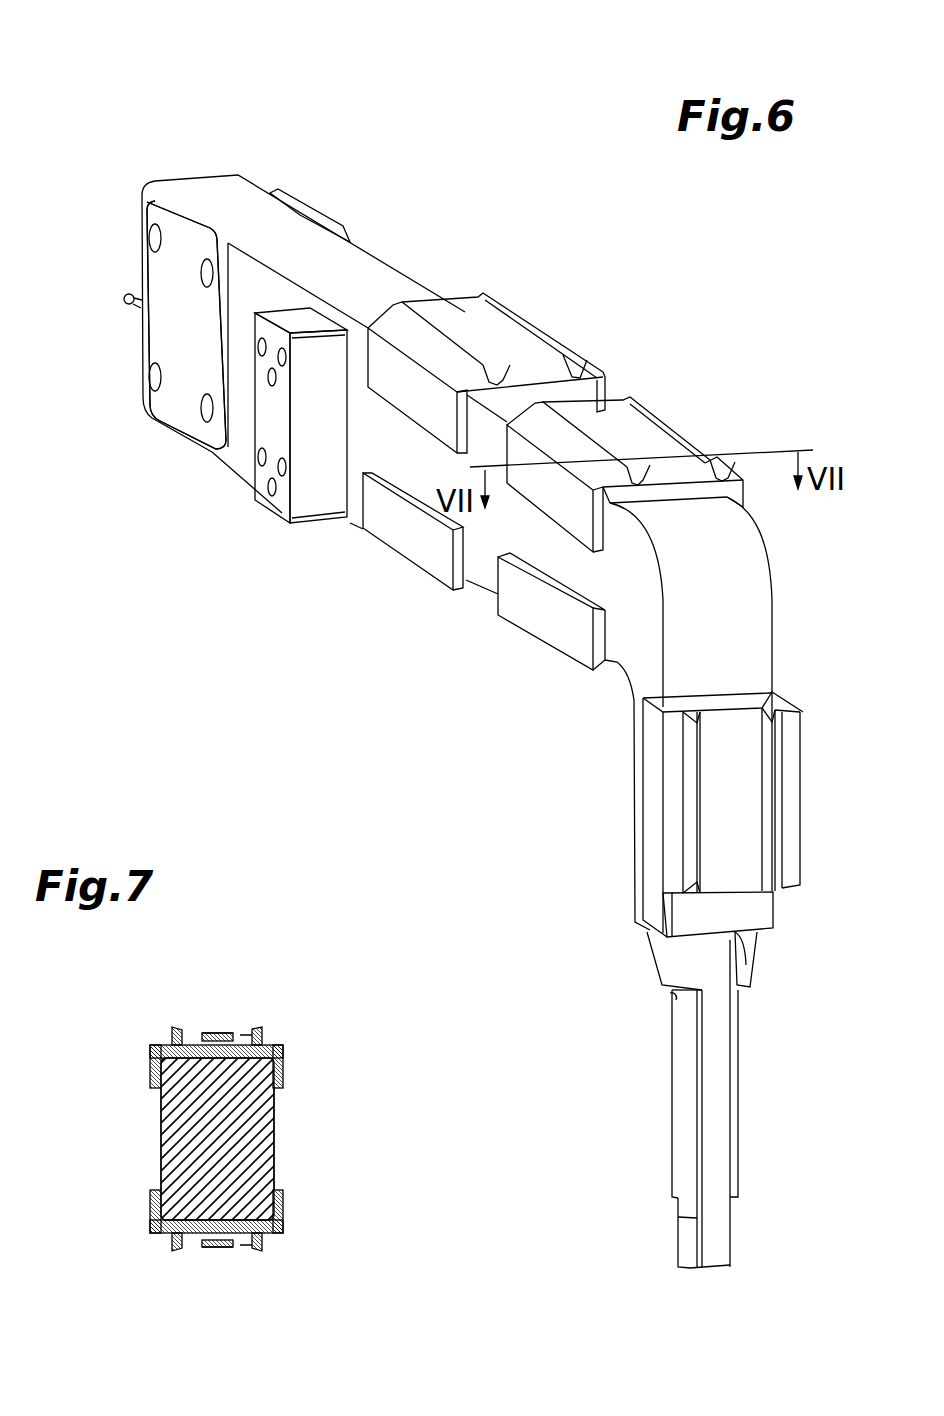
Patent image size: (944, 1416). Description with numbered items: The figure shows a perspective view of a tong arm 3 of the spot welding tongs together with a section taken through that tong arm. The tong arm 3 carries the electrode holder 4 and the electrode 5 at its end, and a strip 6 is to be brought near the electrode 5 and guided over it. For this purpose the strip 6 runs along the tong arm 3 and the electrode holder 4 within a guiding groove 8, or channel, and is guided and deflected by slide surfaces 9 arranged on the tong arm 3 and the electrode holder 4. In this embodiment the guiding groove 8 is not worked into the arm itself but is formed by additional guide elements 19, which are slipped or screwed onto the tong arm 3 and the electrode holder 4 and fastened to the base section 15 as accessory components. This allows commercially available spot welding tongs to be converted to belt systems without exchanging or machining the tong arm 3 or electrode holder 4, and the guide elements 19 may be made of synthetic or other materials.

In FIG. 6, the tong arm 3 is at (318, 590).
In FIG. 6, the electrode holder 4 is at (677, 960).
In FIG. 6, the electrode 5 is at (687, 1230).
In FIG. 6, the strip 6 is at (717, 1110).
In FIG. 7, the strip 6 is at (208, 1035).
In FIG. 7, the guiding groove 8 is at (197, 1027).
In FIG. 7, the slide surface 9 is at (247, 1035).
In FIG. 6, the base section 15 is at (168, 156).
In FIG. 7, the base section 15 is at (217, 1153).
In FIG. 6, the guide element 19 is at (490, 333).
In FIG. 7, the guide element 19 is at (227, 1035).